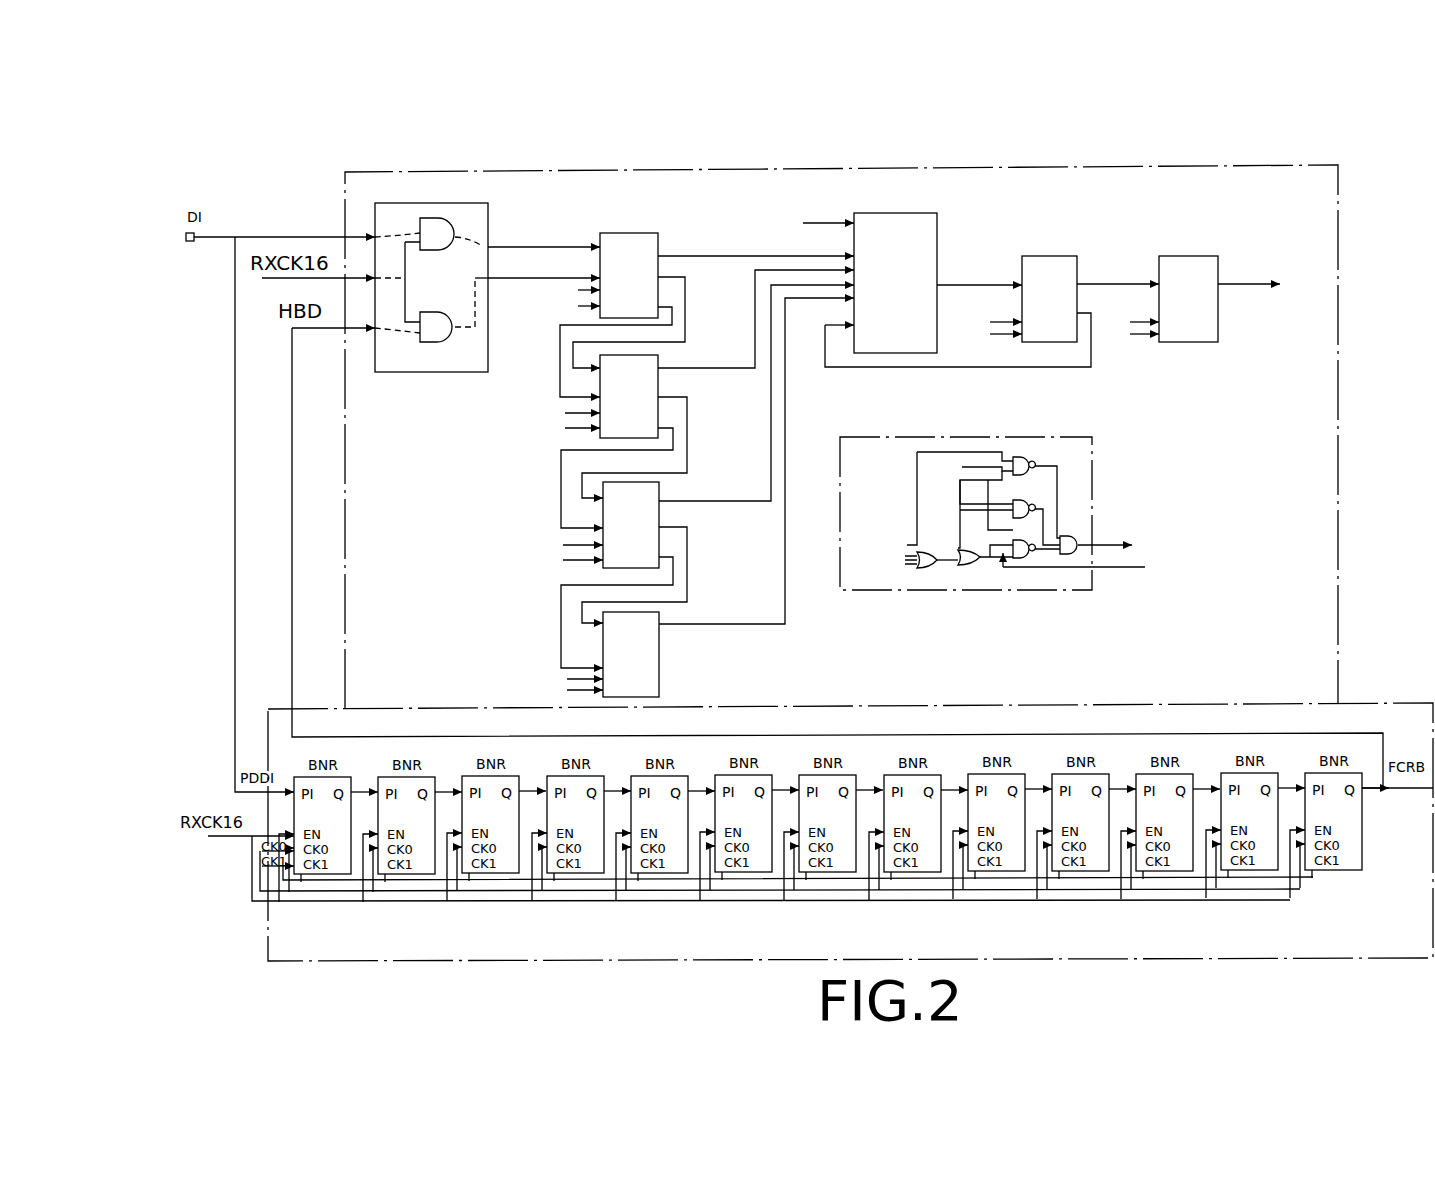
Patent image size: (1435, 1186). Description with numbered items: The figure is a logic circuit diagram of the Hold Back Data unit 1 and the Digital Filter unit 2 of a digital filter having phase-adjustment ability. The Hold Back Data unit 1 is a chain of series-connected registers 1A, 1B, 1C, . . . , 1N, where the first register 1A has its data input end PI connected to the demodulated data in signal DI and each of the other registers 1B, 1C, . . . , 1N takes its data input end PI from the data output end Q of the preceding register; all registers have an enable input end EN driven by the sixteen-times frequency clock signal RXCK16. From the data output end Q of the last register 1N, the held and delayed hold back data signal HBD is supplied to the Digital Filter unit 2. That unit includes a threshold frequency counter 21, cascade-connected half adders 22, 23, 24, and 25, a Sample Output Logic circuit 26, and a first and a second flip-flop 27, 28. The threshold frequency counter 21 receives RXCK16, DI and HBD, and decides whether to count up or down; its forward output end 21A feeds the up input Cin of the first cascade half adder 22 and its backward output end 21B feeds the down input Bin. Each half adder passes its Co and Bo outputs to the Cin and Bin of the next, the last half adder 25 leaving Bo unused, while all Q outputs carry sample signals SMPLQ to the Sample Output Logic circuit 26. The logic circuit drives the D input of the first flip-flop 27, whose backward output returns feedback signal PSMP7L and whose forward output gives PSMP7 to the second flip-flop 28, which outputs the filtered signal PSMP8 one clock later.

The Hold Back Data unit 1 is at (733, 945).
The first register 1A is at (332, 870).
The register 1B is at (416, 870).
The register 1C is at (500, 870).
The last register 1N is at (1327, 866).
The Digital Filter unit 2 is at (1338, 243).
The threshold frequency counter 21 is at (470, 324).
The forward or up output end 21A is at (490, 243).
The backward or down output end 21B is at (490, 282).
The first cascade half adder 22 is at (652, 240).
The cascade half adder 23 is at (658, 385).
The cascade half adder 24 is at (659, 513).
The last cascade half adder 25 is at (659, 637).
The Sample Output Logic circuit 26 is at (889, 222).
The first flip-flop 27 is at (1059, 266).
The second flip-flop 28 is at (1201, 266).